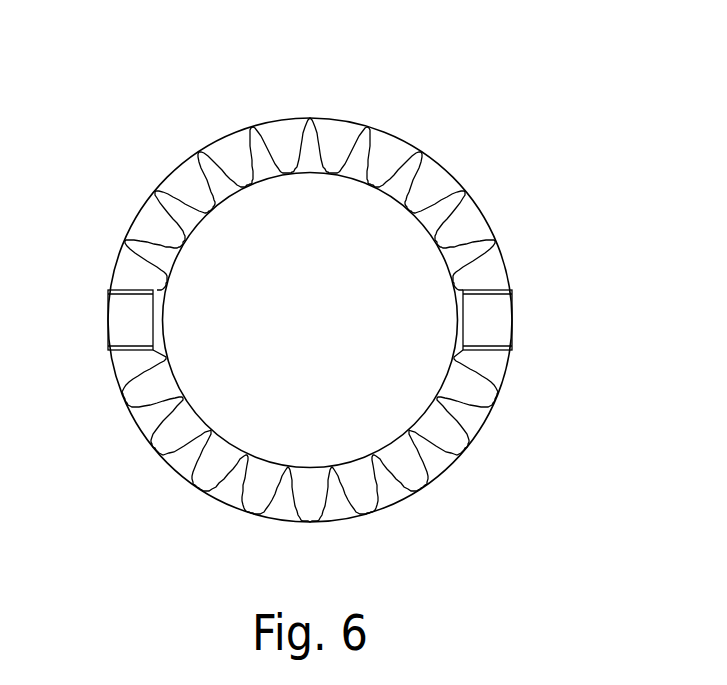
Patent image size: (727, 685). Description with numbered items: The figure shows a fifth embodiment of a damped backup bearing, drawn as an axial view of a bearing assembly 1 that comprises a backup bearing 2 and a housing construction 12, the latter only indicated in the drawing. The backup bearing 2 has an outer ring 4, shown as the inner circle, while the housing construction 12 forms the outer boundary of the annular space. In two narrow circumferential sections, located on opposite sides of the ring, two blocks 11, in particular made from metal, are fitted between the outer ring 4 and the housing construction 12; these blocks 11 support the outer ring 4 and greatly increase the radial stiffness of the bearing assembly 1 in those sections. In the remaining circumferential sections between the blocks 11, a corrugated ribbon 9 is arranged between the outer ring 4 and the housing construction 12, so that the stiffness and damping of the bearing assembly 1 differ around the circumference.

The bearing assembly 1 is at (167, 93).
The backup bearing 2 is at (200, 476).
The outer ring 4 is at (296, 459).
The corrugated ribbon 9 is at (317, 168).
The block 11 is at (110, 365).
The housing construction 12 is at (278, 122).